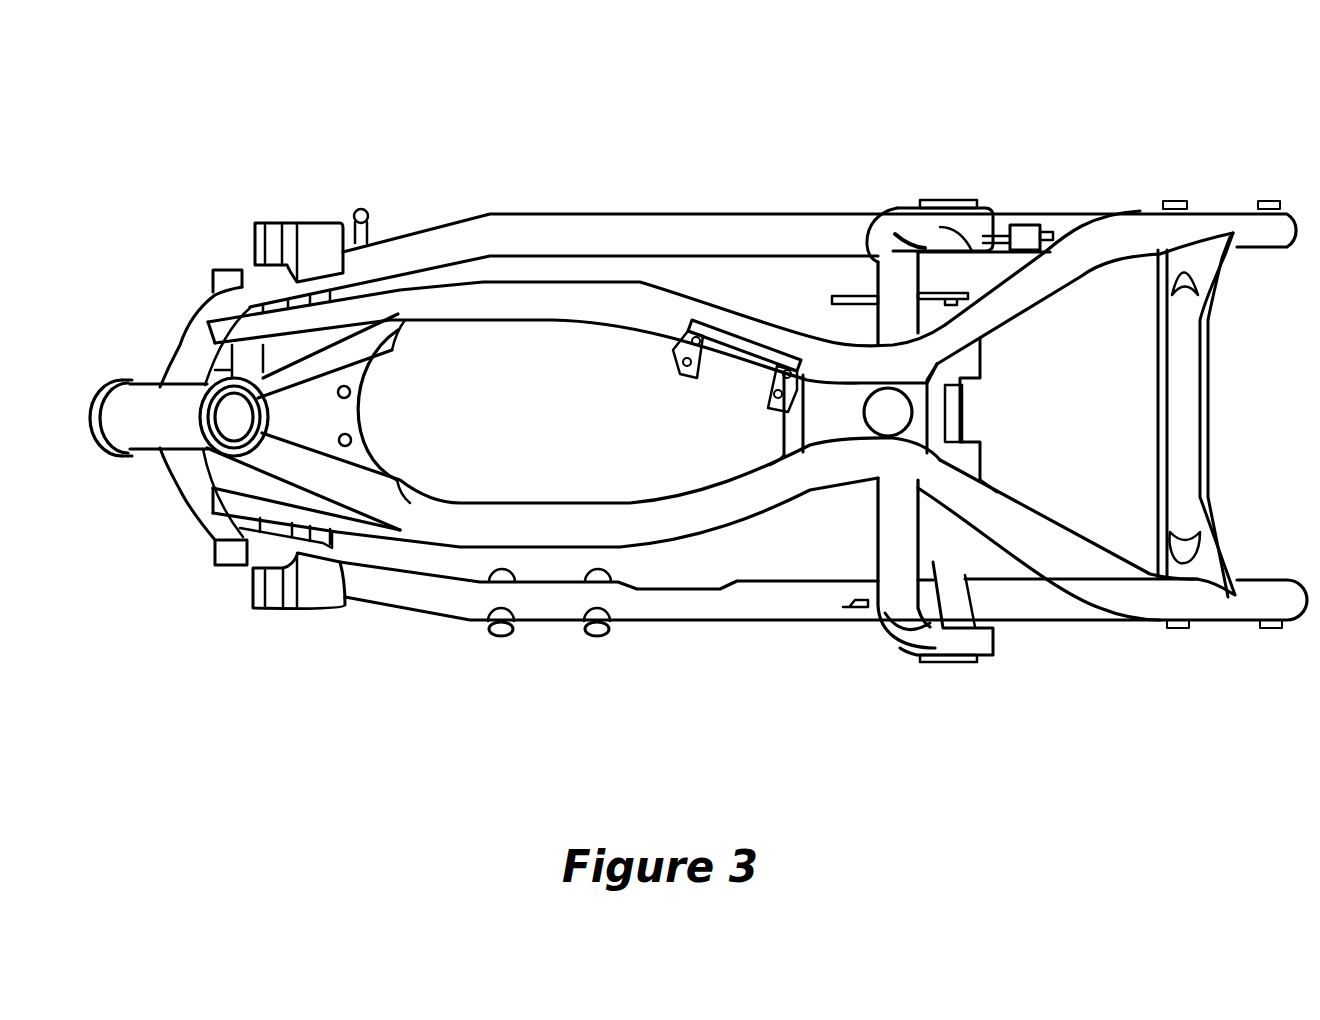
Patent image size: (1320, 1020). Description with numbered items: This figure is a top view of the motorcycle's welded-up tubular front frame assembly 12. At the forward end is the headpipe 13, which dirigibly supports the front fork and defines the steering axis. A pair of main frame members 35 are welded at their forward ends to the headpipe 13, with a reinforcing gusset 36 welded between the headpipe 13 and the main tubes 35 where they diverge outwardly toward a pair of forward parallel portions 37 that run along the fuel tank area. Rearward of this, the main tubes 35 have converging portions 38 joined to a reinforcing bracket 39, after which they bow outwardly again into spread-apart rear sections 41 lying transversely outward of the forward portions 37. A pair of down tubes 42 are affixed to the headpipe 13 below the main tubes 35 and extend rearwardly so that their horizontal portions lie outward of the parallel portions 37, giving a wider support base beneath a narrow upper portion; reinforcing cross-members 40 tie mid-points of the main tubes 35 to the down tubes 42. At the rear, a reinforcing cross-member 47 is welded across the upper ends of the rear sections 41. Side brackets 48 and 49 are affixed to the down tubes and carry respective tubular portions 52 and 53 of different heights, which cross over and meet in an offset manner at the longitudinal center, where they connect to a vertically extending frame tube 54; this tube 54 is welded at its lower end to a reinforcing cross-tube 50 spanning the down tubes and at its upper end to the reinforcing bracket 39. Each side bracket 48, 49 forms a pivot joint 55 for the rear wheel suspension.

The front frame assembly 12 is at (834, 156).
The headpipe 13 is at (156, 400).
The main frame members 35 is at (602, 322).
The reinforcing gusset 36 is at (357, 415).
The forward parallel portions 37 is at (405, 328).
The converging portions 38 is at (757, 330).
The reinforcing bracket 39 is at (823, 428).
The reinforcing cross-members 40 is at (267, 503).
The spread-apart rear sections 41 is at (1133, 210).
The down tubes 42 is at (684, 226).
The reinforcing cross-member 47 is at (1192, 450).
The side bracket 48 is at (983, 656).
The side bracket 49 is at (983, 207).
The reinforcing cross-tube 50 is at (927, 555).
The tubular portion 52 is at (884, 553).
The tubular portion 53 is at (900, 278).
The vertically extending frame tube 54 is at (885, 423).
The pivot joint 55 is at (947, 200).